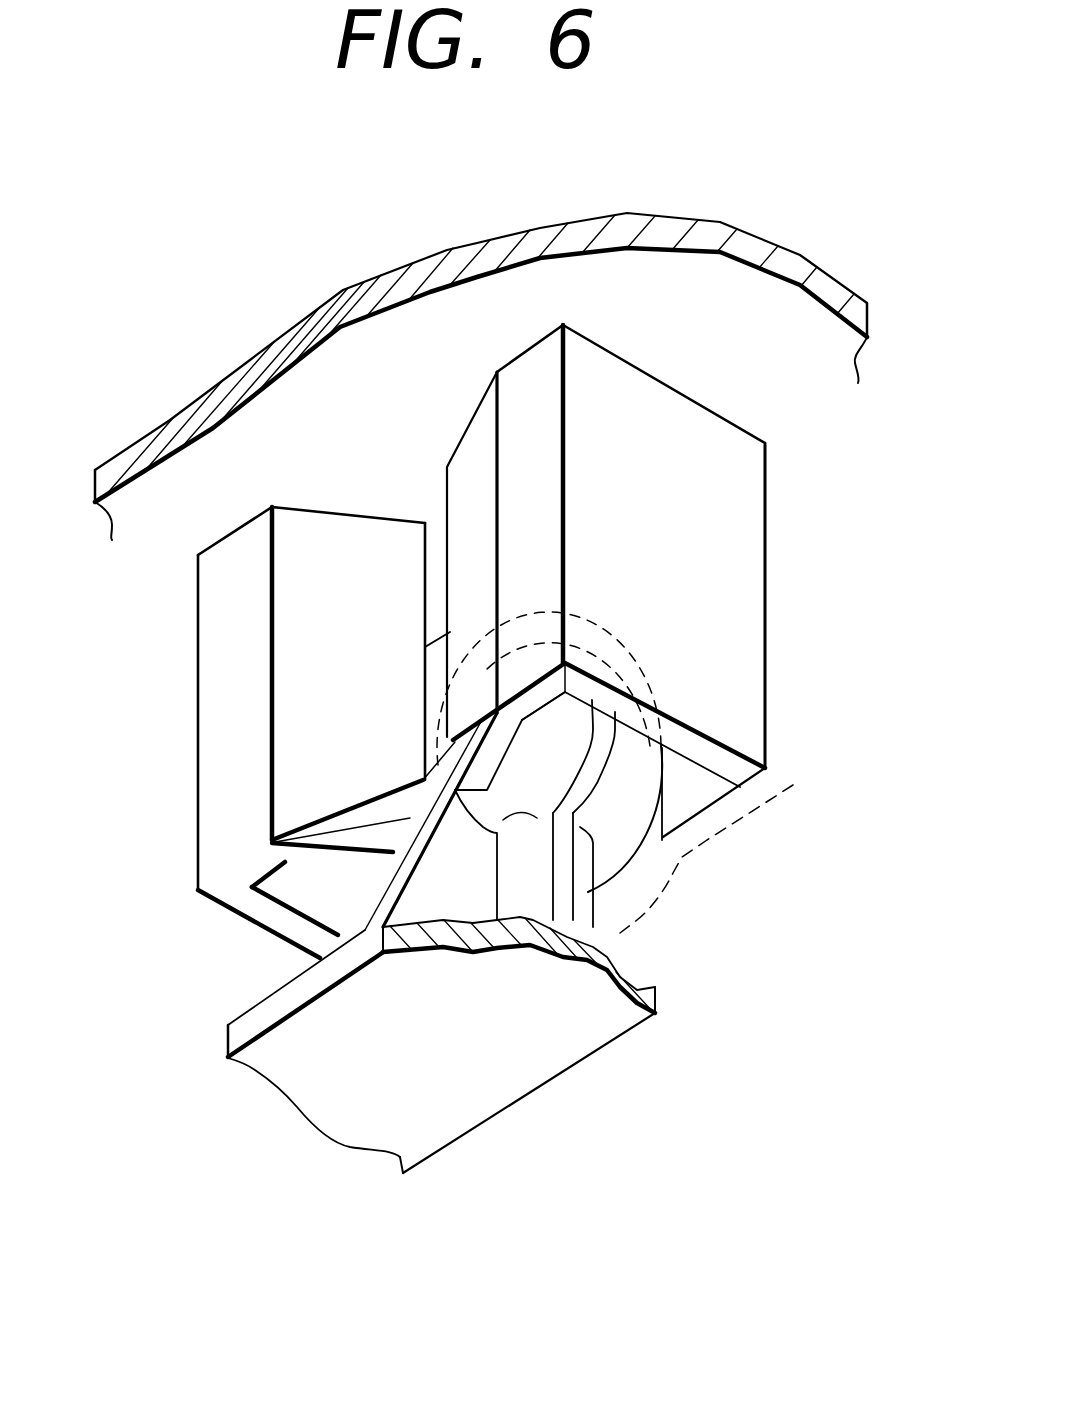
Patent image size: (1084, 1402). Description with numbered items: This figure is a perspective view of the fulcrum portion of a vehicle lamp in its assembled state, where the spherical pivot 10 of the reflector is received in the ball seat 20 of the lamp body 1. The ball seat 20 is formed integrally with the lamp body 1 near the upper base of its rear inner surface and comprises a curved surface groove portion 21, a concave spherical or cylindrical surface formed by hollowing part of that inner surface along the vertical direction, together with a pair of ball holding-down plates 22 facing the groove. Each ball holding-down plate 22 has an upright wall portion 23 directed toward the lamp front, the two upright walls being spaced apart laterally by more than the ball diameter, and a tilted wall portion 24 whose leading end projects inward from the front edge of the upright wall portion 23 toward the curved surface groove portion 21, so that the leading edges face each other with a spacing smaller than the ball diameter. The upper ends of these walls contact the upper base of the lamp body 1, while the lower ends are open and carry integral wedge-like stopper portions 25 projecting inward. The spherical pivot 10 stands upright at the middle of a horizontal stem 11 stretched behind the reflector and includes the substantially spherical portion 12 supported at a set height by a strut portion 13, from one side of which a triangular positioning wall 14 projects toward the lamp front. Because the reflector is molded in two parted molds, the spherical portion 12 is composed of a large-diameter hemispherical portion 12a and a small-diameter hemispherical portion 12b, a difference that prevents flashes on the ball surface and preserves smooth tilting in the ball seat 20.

The lamp body 1 is at (718, 232).
The spherical pivot 10 is at (682, 799).
The horizontal stem 11 is at (453, 1107).
The spherical portion 12 is at (660, 745).
The large-diameter hemispherical portion 12a is at (628, 753).
The small-diameter hemispherical portion 12b is at (553, 763).
The strut portion 13 is at (523, 880).
The positioning wall 14 is at (442, 895).
The ball seat 20 is at (805, 750).
The curved surface groove portion 21 is at (645, 855).
The ball holding-down plate 22 is at (772, 486).
The upright wall portion 23 is at (735, 555).
The tilted wall portion 24 is at (467, 470).
The stopper portion 25 is at (365, 833).